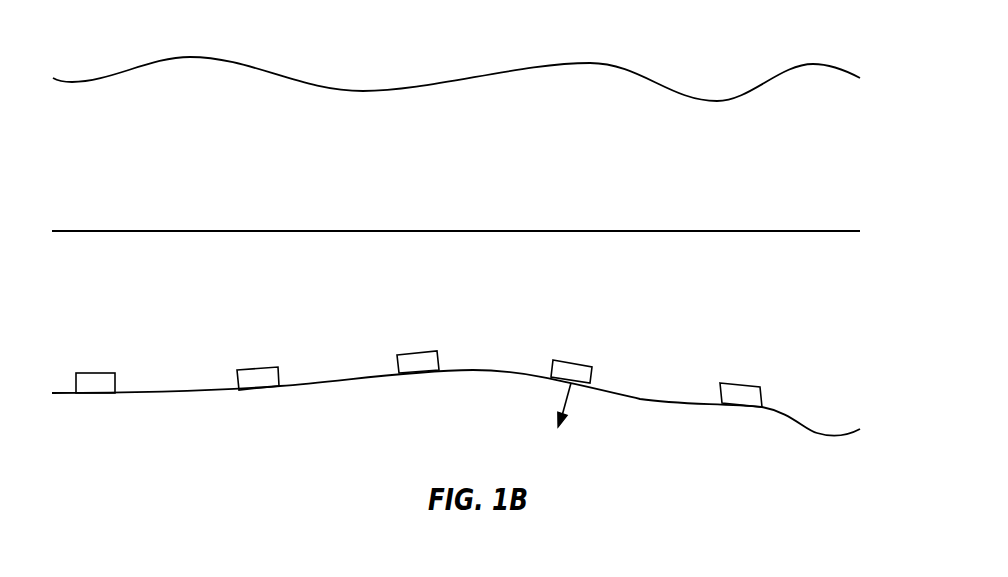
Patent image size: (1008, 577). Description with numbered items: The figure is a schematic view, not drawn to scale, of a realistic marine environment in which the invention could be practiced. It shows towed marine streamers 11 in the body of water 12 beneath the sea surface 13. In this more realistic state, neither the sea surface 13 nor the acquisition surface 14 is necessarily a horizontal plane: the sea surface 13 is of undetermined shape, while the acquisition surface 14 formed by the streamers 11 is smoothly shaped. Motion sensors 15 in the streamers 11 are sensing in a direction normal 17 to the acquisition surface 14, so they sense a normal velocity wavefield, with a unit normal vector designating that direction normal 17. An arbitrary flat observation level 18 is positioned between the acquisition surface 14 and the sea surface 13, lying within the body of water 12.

The towed marine streamers 11 is at (738, 383).
The body of water 12 is at (112, 172).
The sea surface 13 is at (825, 65).
The acquisition surface 14 is at (813, 434).
The motion sensors 15 is at (95, 373).
The direction normal 17 is at (568, 398).
The arbitrary flat observation level 18 is at (810, 231).